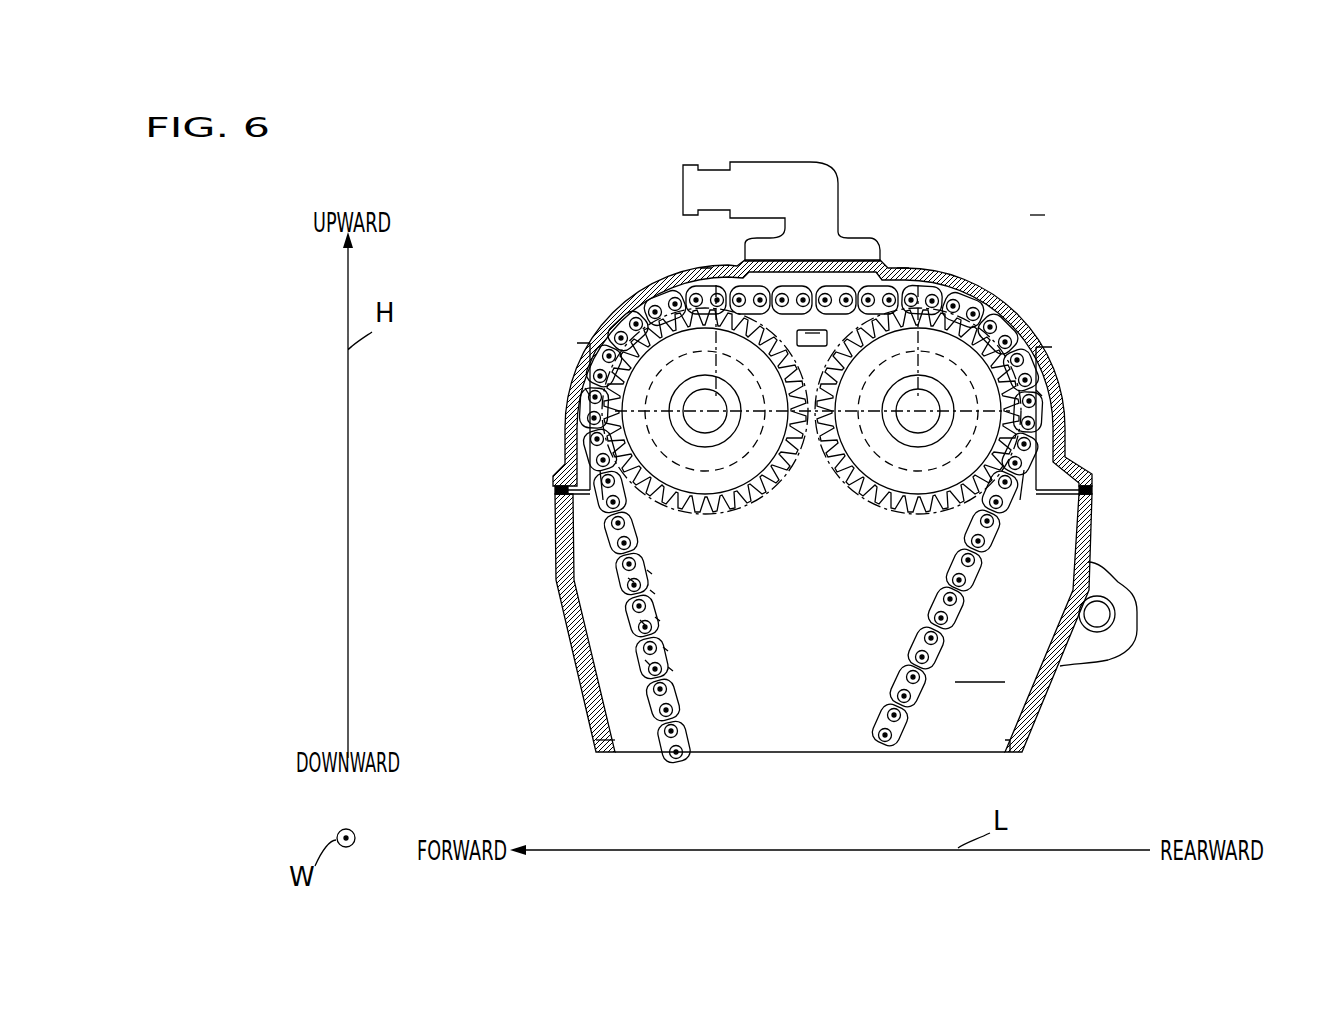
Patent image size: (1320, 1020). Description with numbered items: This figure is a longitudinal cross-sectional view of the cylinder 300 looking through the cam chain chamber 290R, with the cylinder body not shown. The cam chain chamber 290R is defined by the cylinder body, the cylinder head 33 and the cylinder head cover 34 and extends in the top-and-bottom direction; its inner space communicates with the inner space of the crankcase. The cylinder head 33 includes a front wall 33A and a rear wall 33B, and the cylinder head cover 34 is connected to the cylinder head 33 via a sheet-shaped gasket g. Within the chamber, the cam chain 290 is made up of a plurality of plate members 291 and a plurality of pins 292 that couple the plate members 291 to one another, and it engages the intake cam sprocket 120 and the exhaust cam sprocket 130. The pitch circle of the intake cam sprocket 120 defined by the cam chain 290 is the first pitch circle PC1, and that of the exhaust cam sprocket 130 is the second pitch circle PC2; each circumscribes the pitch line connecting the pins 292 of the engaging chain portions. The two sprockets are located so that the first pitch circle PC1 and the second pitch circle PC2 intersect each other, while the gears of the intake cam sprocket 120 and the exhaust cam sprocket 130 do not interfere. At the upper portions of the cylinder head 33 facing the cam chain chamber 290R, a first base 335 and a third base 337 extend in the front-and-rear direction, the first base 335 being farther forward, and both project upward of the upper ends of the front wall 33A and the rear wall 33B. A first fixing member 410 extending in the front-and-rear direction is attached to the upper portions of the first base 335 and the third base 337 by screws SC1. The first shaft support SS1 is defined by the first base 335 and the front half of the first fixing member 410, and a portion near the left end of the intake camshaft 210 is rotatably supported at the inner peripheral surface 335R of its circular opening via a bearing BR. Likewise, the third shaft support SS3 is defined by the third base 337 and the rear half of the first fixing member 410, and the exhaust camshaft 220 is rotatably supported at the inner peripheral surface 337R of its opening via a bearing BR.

The cylinder 300 is at (1040, 205).
The cylinder head cover 34 is at (938, 270).
The cylinder head 33 is at (1091, 558).
The front wall 33A is at (595, 737).
The rear wall 33B is at (1027, 731).
The first fixing member 410 is at (828, 330).
The intake camshaft 210 is at (688, 388).
The exhaust camshaft 220 is at (940, 390).
The intake cam sprocket 120 is at (713, 482).
The exhaust cam sprocket 130 is at (921, 483).
The first pitch circle PC1 is at (775, 492).
The second pitch circle PC2 is at (845, 513).
The screw SC1 is at (1036, 345).
The bearing BR is at (903, 265).
The cam chain 290 is at (632, 712).
The cam chain chamber 290R is at (980, 667).
The plate member 291 is at (645, 663).
The pin 292 is at (668, 667).
The first base 335 is at (592, 468).
The third base 337 is at (1030, 478).
The inner peripheral surface 335R is at (587, 392).
The inner peripheral surface 337R is at (1040, 393).
The first shaft support SS1 is at (596, 503).
The third shaft support SS3 is at (1028, 497).
The gasket g is at (1090, 490).